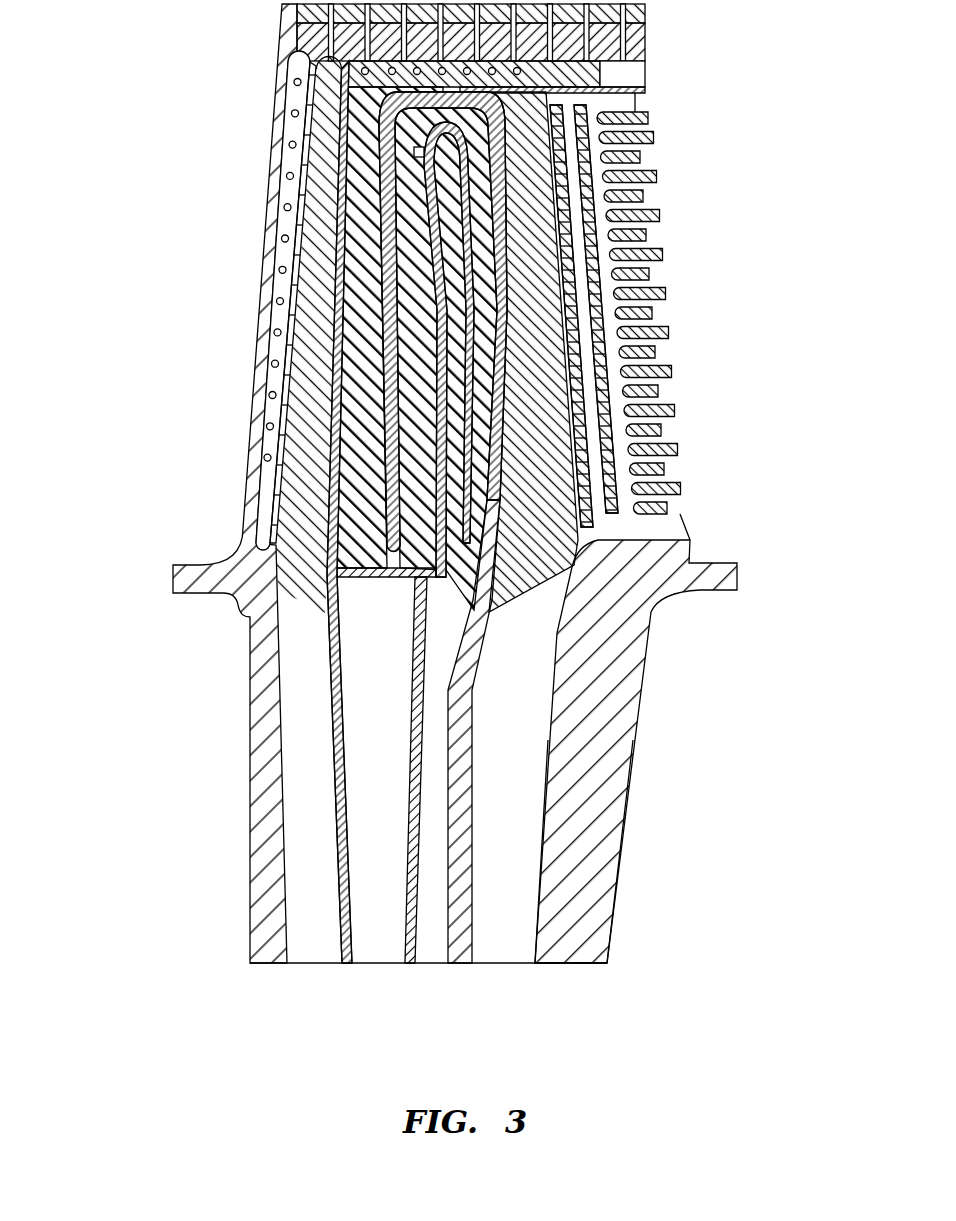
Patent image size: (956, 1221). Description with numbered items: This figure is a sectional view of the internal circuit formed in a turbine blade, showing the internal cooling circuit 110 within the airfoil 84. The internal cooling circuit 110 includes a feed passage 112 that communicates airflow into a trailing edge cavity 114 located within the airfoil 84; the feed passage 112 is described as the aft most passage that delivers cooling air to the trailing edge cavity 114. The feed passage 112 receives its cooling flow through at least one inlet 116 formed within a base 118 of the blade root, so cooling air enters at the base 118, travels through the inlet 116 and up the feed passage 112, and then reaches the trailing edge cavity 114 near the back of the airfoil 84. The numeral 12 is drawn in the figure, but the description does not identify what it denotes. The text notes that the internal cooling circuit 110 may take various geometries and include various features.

The airfoil 84 is at (178, 283).
The fins 12 is at (622, 222).
The trailing edge cavity 114 is at (612, 422).
The internal cooling circuit 110 is at (517, 697).
The feed passage 112 is at (517, 850).
The inlet 116 is at (507, 943).
The base 118 is at (553, 965).